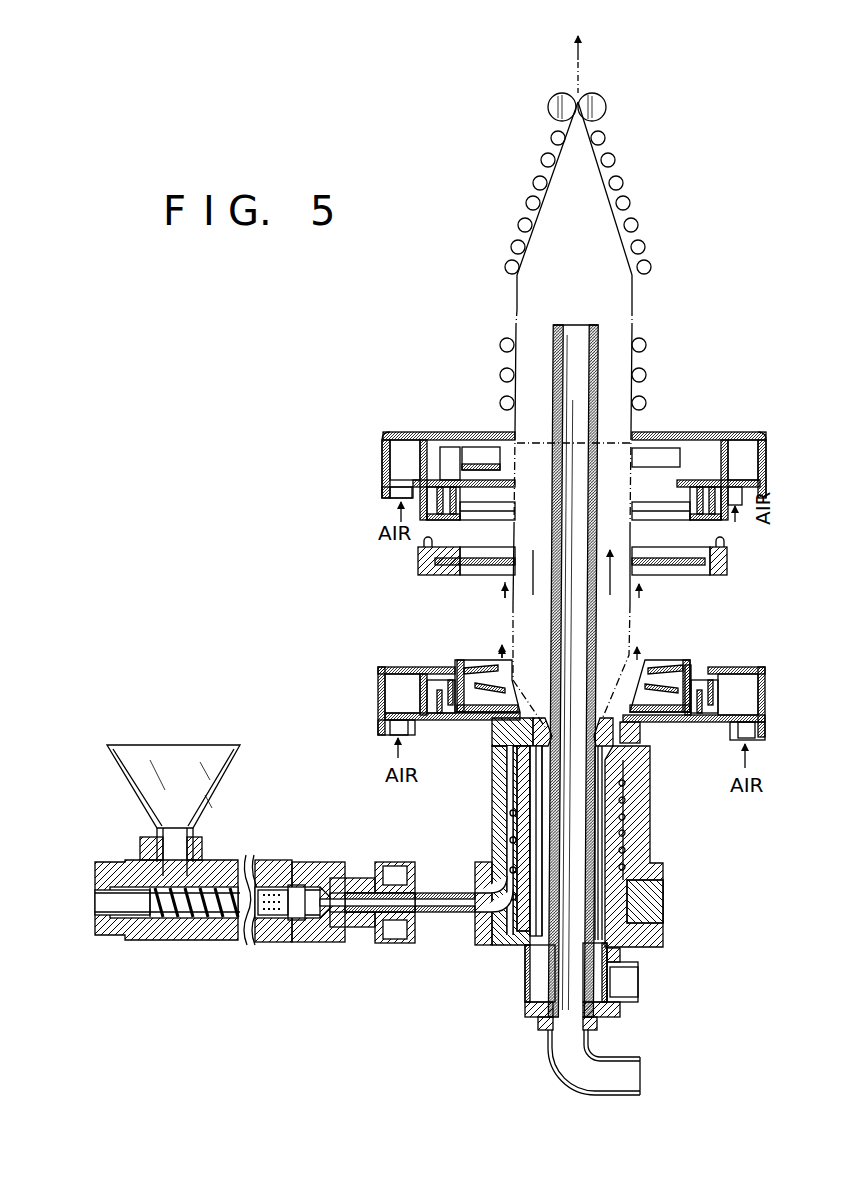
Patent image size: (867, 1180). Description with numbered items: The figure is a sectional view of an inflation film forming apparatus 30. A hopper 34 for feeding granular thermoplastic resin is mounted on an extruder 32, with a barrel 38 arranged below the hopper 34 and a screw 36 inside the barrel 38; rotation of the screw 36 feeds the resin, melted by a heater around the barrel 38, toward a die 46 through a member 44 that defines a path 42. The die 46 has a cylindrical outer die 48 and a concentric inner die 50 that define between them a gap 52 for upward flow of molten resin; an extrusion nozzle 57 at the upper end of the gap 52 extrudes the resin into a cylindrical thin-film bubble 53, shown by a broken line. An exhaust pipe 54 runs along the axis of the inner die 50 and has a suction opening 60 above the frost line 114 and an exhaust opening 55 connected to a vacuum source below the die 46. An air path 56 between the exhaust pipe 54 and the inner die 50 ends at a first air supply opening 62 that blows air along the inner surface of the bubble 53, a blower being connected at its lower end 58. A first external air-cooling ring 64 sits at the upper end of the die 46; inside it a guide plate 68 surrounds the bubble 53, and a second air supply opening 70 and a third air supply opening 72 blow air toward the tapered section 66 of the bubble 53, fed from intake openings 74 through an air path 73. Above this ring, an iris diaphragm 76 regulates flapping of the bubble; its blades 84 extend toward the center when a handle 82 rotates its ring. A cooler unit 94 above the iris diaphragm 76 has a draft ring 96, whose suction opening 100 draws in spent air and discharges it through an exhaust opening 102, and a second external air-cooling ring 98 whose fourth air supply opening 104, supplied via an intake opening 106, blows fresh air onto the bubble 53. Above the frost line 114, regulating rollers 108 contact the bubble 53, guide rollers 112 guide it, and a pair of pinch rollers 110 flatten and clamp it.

The inflation film forming apparatus 30 is at (370, 354).
The extruder 32 is at (277, 942).
The hopper 34 is at (180, 760).
The screw 36 is at (252, 882).
The barrel 38 is at (240, 940).
The path 42 is at (425, 914).
The member defining a path 44 is at (452, 928).
The die 46 is at (494, 828).
The outer die 48 is at (506, 770).
The inner die 50 is at (515, 800).
The gap 52 is at (628, 805).
The bubble 53 is at (505, 628).
The exhaust pipe 54 is at (585, 626).
The exhaust opening 55 is at (612, 1058).
The air path 56 is at (634, 840).
The extrusion nozzle 57 is at (515, 745).
The lower end of the air path 58 is at (638, 962).
The suction opening 60 is at (571, 326).
The first air supply opening 62 is at (505, 712).
The first external air-cooling ring 64 is at (400, 666).
The tapered section 66 is at (642, 684).
The guide plate 68 is at (500, 680).
The second air supply opening 70 is at (642, 712).
The third air supply opening 72 is at (651, 667).
The air path 73 is at (490, 722).
The intake openings 74 is at (745, 752).
The iris diaphragm 76 is at (727, 576).
The handle 82 is at (424, 543).
The blades 84 is at (668, 580).
The cooler unit 94 is at (447, 444).
The draft ring 96 is at (726, 512).
The second external air-cooling ring 98 is at (382, 445).
The suction opening 100 is at (655, 512).
The exhaust opening 102 is at (726, 540).
The fourth air supply opening 104 is at (487, 464).
The intake opening 106 is at (392, 498).
The regulating rollers 108 is at (646, 378).
The pinch rollers 110 is at (549, 112).
The guide rollers 112 is at (512, 243).
The frost line 114 is at (614, 440).